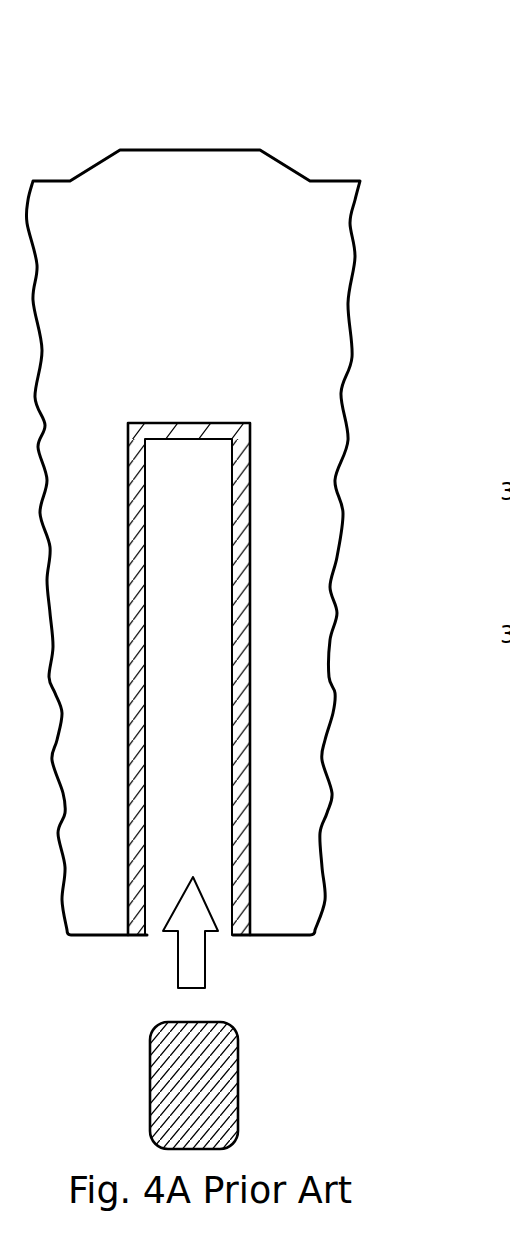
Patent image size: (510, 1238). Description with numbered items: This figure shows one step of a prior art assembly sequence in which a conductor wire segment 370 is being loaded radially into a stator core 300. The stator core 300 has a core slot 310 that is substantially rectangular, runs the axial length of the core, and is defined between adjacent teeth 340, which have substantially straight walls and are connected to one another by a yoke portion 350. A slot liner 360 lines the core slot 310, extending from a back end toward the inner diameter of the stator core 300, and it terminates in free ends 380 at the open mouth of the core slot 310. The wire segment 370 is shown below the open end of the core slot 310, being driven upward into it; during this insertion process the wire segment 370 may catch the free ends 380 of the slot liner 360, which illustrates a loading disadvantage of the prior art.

The stator core 300 is at (241, 505).
The yoke portion 350 is at (241, 542).
The teeth 340 is at (285, 520).
The slot liner 360 is at (284, 679).
The free ends 380 is at (242, 886).
The core slot 310 is at (222, 917).
The wire segment 370 is at (157, 1089).